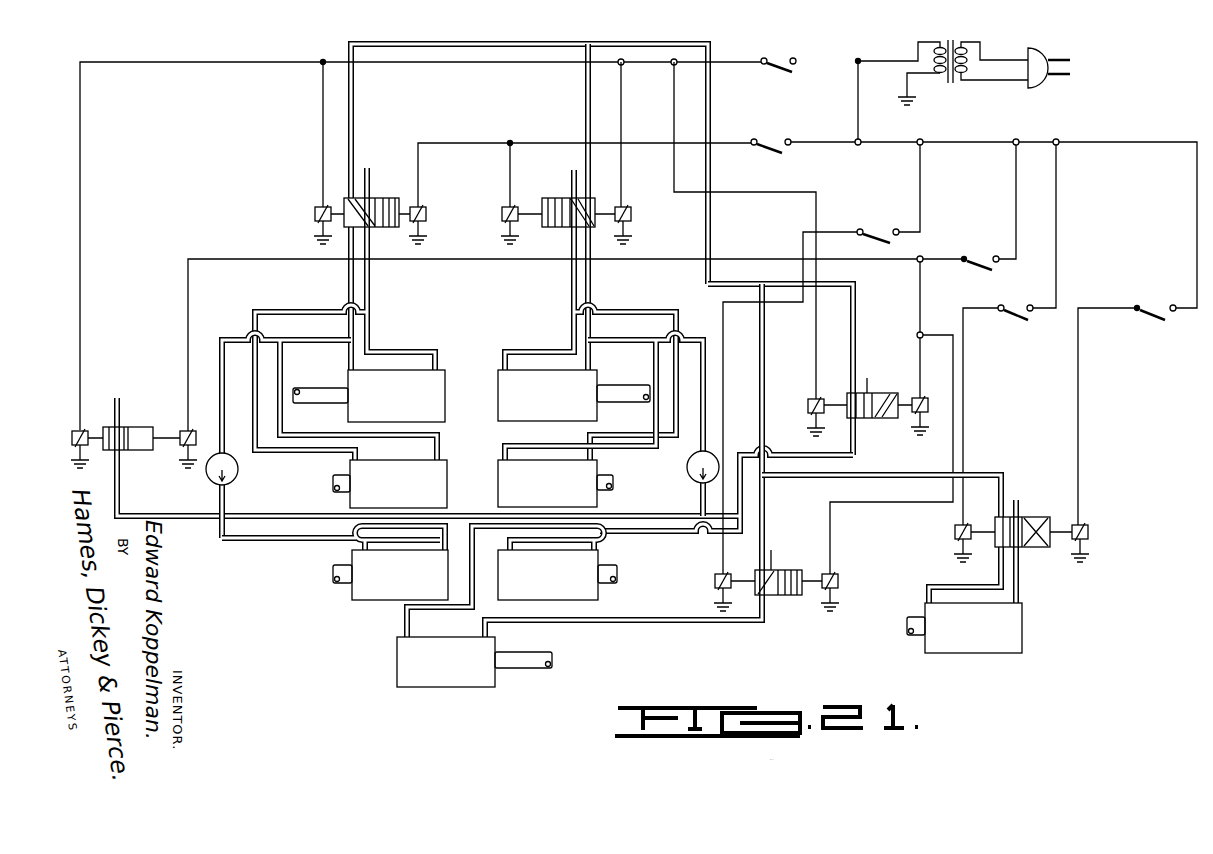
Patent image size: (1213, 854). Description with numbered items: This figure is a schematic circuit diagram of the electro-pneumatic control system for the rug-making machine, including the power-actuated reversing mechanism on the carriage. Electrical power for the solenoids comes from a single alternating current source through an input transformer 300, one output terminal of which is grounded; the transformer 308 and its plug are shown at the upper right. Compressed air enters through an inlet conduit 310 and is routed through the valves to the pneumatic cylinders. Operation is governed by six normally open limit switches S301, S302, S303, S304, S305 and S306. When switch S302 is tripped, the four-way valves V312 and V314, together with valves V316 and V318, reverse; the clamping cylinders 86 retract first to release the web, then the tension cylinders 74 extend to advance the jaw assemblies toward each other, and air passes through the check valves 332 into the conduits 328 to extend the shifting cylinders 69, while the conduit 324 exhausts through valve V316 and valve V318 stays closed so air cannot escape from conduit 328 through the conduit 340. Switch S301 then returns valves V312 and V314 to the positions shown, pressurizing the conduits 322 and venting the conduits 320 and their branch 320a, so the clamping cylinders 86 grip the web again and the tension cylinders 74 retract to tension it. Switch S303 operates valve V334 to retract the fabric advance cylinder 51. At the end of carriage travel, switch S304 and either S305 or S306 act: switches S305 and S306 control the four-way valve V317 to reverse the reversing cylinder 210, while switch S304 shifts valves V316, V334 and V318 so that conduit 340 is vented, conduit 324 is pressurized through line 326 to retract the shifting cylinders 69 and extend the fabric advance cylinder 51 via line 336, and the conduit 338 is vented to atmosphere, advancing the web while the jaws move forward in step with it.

The inlet conduit 310 is at (451, 20).
The input transformer 300 is at (950, 83).
The transformer 308 is at (892, 52).
The limit switch S301 is at (807, 184).
The limit switch S302 is at (439, 233).
The limit switch S303 is at (823, 356).
The limit switch S304 is at (603, 356).
The limit switch S305 is at (1011, 332).
The limit switch S306 is at (1127, 403).
The four-way valve V312 is at (413, 153).
The four-way valve V314 is at (566, 153).
The valve V316 is at (801, 249).
The four-way valve V317 is at (925, 539).
The valve V318 is at (134, 437).
The valve V334 is at (776, 579).
The conduits 320 is at (593, 300).
The conduits 322 is at (556, 296).
The air line branch 320a is at (545, 435).
The clamping cylinders 86 is at (606, 379).
The tension cylinders 74 is at (605, 470).
The shifting cylinders 69 is at (621, 592).
The fabric advance cylinder 51 is at (472, 687).
The fluid motor 210 is at (1022, 632).
The check valves 332 is at (675, 503).
The conduit 324 is at (600, 512).
The air line 326 is at (856, 330).
The conduits 328 is at (660, 555).
The air line 336 is at (475, 600).
The conduit 338 is at (640, 623).
The conduit 340 is at (200, 520).